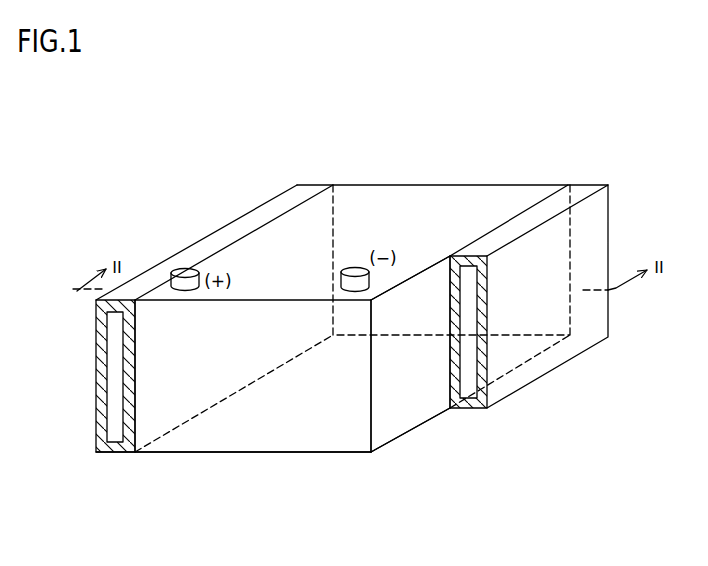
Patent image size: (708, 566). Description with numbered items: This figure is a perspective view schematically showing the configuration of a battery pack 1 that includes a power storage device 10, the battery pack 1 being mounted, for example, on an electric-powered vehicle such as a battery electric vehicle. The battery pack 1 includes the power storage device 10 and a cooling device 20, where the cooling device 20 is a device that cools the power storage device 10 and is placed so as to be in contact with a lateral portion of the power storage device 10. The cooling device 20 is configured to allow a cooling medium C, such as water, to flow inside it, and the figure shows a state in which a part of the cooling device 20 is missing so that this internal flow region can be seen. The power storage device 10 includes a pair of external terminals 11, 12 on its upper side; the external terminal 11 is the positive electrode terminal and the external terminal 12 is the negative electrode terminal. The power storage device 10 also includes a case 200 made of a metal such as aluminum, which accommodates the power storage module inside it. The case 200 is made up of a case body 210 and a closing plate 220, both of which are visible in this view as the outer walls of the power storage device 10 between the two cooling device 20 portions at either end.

The battery pack 1 is at (241, 159).
The power storage device 10 is at (464, 183).
The cooling device 20 is at (310, 183).
The external terminal 11 is at (185, 268).
The external terminal 12 is at (355, 267).
The case 200 is at (337, 516).
The case body 210 is at (407, 405).
The closing plate 220 is at (345, 418).
The cooling medium C is at (467, 338).